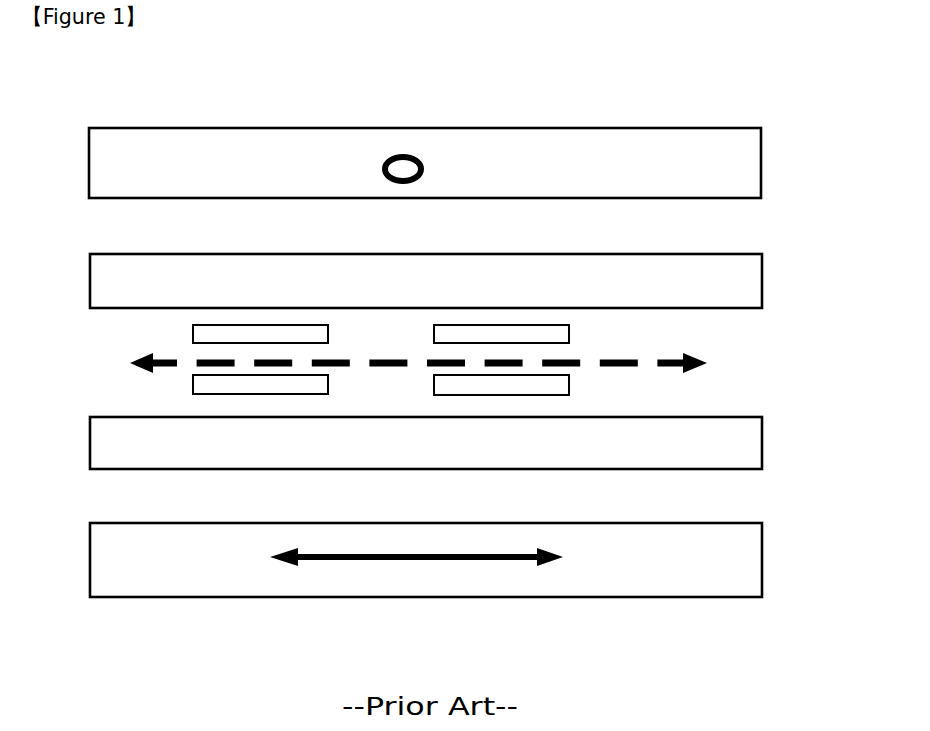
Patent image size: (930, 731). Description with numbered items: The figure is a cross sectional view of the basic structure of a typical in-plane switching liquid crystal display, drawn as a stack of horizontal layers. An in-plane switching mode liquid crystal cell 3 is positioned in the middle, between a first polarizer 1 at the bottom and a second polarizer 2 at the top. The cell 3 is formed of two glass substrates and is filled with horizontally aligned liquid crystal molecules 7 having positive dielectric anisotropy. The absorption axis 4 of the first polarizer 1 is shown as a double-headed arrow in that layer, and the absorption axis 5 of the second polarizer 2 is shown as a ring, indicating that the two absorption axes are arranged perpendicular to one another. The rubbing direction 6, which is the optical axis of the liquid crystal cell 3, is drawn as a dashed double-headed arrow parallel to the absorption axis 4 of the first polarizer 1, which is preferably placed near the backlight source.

The first polarizer 1 is at (748, 558).
The second polarizer 2 is at (740, 159).
The in-plane switching (IPS) mode liquid crystal cell 3 is at (434, 361).
The absorption axis of the first polarizer 4 is at (418, 561).
The absorption axis of the second polarizer 5 is at (395, 154).
The rubbing direction 6 is at (140, 358).
The liquid crystal molecules 7 is at (205, 383).